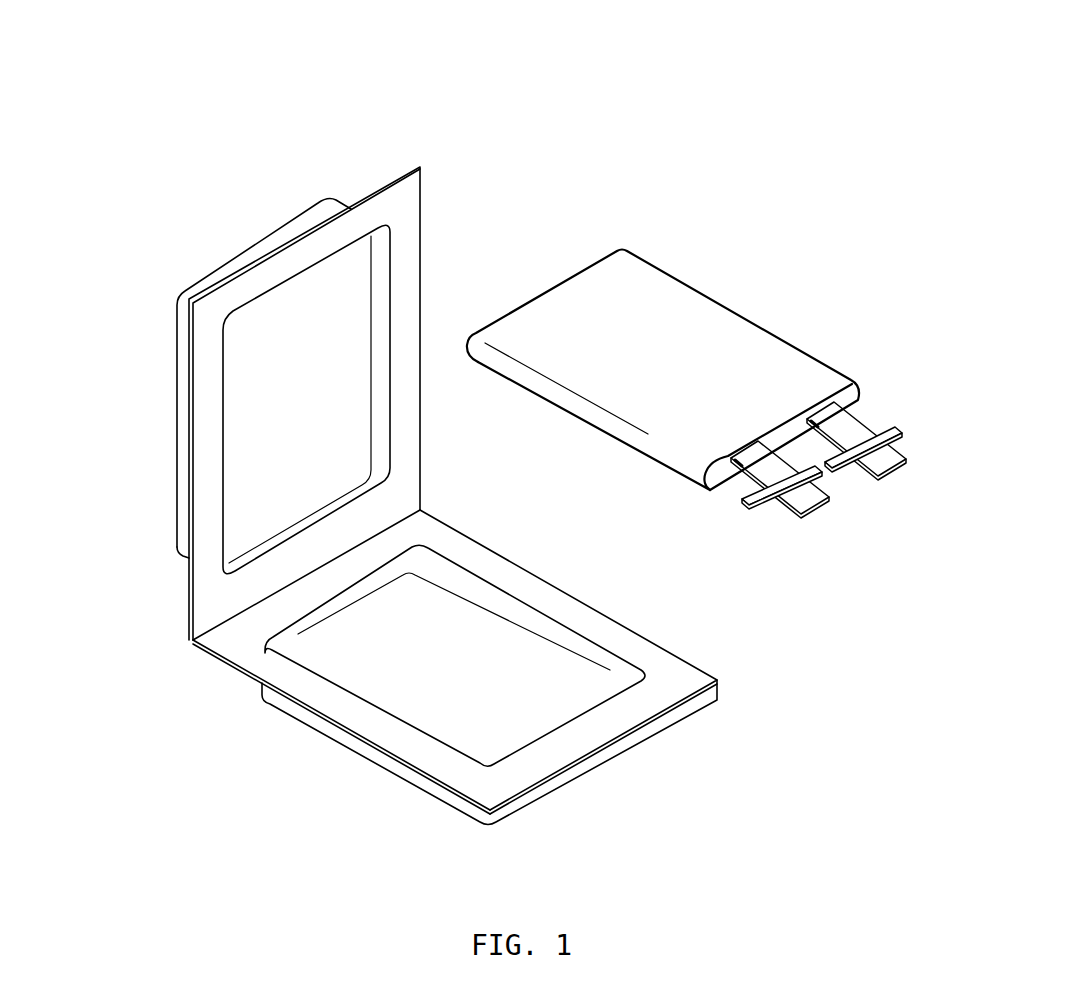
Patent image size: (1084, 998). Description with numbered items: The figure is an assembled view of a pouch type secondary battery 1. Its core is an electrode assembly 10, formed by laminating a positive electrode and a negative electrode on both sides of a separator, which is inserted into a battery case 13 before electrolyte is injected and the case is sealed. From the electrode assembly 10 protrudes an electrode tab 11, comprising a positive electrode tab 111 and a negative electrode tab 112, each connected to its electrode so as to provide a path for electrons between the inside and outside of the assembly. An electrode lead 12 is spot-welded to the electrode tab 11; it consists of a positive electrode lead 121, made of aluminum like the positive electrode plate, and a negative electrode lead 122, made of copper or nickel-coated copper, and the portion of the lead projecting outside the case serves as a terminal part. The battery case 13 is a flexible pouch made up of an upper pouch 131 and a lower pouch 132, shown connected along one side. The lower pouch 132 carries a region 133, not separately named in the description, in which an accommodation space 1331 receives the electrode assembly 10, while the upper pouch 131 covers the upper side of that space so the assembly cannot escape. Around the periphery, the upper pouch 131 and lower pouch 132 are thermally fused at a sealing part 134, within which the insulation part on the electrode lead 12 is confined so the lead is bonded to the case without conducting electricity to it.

The pouch type secondary battery 1 is at (586, 89).
The electrode assembly 10 is at (834, 270).
The electrode tab 11 is at (592, 497).
The positive electrode tab 111 is at (810, 418).
The negative electrode tab 112 is at (733, 460).
The electrode lead 12 is at (950, 514).
The positive electrode lead 121 is at (899, 466).
The negative electrode lead 122 is at (813, 500).
The battery case 13 is at (102, 328).
The upper pouch 131 is at (177, 338).
The lower pouch 132 is at (230, 663).
The base plate 133 is at (368, 760).
The accommodation space 1331 is at (521, 733).
The sealing part 134 is at (678, 695).